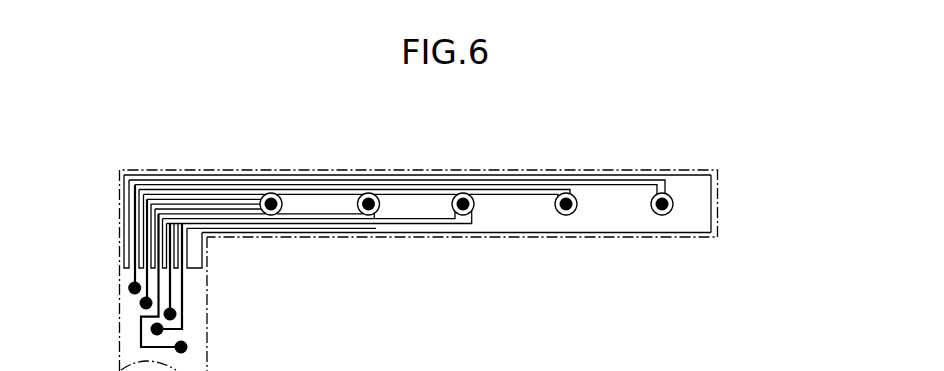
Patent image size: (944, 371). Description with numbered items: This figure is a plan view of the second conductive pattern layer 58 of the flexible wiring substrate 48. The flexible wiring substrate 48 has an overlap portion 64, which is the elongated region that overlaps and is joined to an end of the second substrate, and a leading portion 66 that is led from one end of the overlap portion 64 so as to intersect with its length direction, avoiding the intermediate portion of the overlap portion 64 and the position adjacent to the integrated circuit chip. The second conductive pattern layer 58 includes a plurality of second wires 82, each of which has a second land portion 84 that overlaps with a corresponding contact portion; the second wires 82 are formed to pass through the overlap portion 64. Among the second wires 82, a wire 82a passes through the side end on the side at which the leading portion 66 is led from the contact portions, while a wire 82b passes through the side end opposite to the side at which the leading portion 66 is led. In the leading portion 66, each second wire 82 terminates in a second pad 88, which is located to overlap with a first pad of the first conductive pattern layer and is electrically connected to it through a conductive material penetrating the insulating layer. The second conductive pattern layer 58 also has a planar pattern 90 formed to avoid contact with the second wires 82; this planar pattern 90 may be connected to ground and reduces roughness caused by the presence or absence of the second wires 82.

The flexible wiring substrate 48 is at (116, 250).
The second conductive pattern layer 58 is at (721, 195).
The overlap portion 64 is at (706, 239).
The leading portion 66 is at (208, 327).
The second wires 82 is at (354, 263).
The wire 82a is at (317, 252).
The wire 82b is at (503, 193).
The second land portion 84 is at (576, 213).
The second pad 88 is at (128, 288).
The planar pattern 90 is at (689, 214).